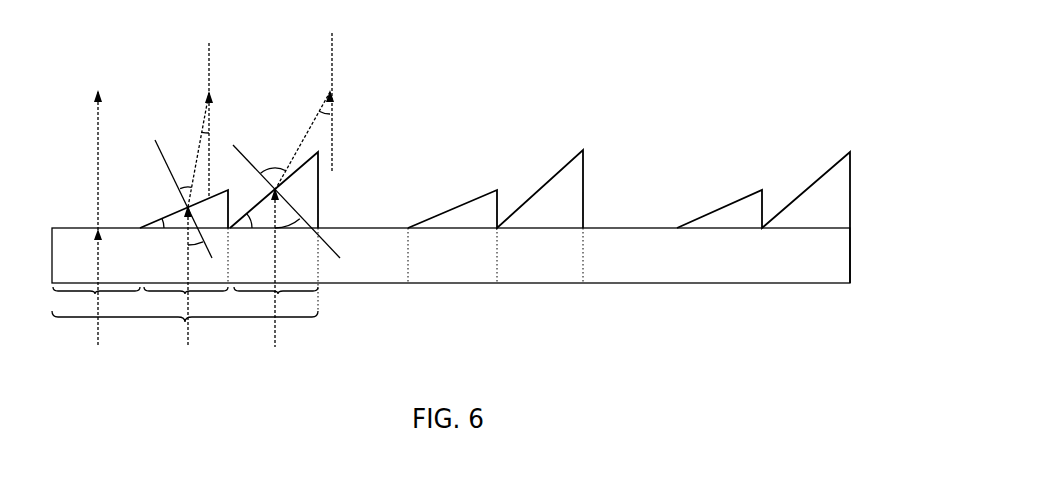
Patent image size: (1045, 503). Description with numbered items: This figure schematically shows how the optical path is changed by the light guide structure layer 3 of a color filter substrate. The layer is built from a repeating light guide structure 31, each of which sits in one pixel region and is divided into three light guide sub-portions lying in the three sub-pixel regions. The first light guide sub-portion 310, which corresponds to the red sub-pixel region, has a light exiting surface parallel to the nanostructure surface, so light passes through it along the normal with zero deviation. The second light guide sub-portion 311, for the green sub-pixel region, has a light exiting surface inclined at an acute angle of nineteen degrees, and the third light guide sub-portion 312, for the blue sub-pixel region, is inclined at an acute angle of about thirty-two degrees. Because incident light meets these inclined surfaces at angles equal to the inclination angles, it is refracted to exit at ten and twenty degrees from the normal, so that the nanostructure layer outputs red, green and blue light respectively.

The light guide structure layer 3 is at (840, 265).
The light guide structure 31 is at (185, 328).
The first light guide sub-portion 310 is at (96, 218).
The second light guide sub-portion 311 is at (188, 195).
The third light guide sub-portion 312 is at (294, 190).